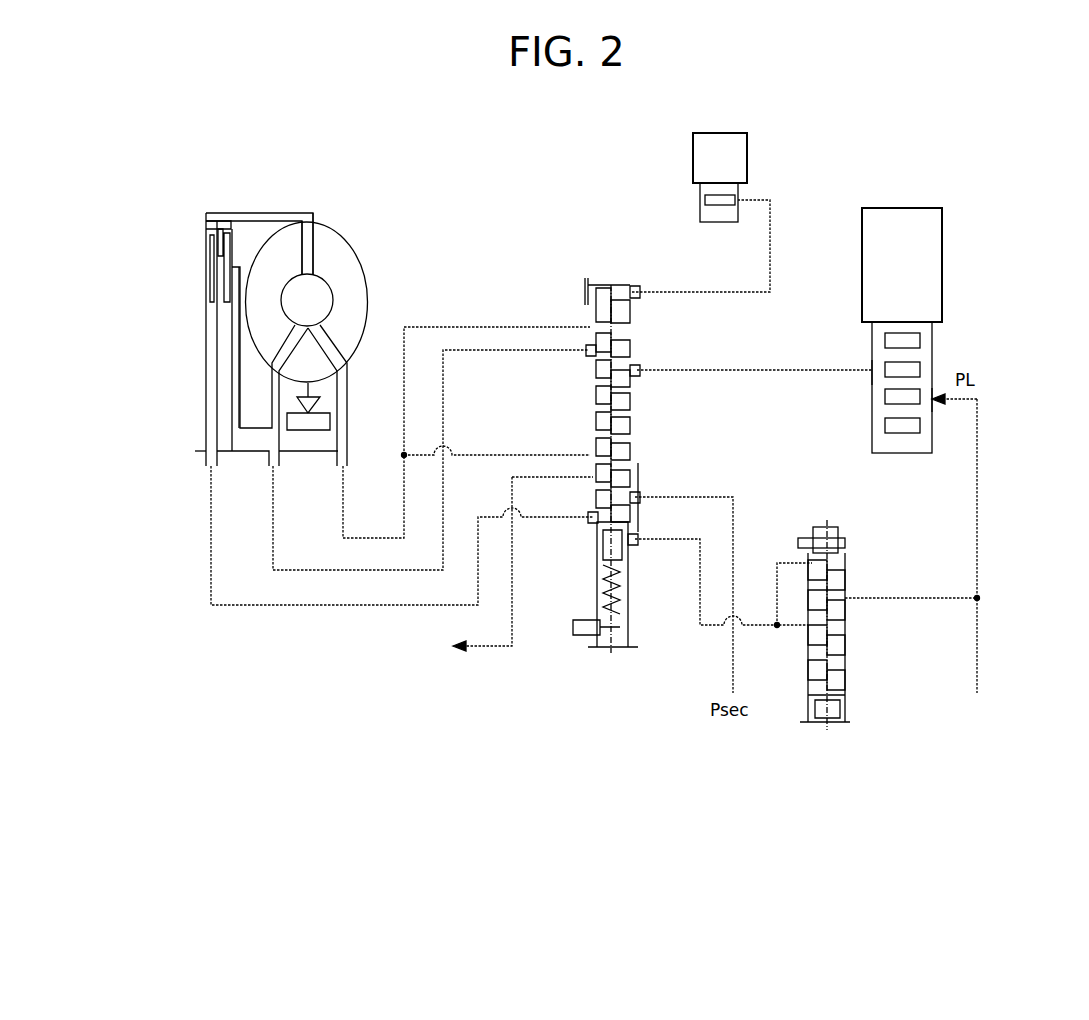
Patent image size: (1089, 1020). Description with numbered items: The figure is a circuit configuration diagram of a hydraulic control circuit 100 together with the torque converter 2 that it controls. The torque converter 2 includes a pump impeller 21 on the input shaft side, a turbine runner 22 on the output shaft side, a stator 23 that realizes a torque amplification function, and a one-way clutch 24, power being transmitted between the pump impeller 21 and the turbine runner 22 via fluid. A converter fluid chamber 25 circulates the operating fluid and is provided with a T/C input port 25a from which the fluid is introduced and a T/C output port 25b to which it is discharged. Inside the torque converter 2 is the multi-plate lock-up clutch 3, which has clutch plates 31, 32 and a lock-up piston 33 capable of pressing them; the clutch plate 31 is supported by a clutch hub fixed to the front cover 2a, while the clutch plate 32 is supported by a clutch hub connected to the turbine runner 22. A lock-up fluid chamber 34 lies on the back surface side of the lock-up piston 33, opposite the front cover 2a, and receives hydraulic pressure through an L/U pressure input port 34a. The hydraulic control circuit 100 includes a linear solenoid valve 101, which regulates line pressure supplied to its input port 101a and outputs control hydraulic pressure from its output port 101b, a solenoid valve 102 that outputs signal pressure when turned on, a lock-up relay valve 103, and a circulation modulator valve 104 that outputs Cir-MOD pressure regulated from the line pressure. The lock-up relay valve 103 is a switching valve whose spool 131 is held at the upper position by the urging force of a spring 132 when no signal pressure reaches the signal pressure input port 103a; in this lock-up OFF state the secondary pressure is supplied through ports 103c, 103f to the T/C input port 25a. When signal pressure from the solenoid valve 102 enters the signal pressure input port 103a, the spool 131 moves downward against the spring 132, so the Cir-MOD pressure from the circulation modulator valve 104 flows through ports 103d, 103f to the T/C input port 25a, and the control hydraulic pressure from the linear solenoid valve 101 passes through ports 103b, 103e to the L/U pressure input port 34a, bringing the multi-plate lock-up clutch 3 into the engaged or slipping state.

The torque converter 2 is at (348, 206).
The front cover 2a is at (205, 374).
The multi-plate lock-up clutch 3 is at (238, 230).
The pump impeller 21 is at (346, 244).
The turbine runner 22 is at (291, 230).
The stator 23 is at (312, 357).
The one-way clutch 24 is at (319, 403).
The converter fluid chamber 25 is at (258, 226).
The T/C input port 25a is at (207, 468).
The T/C output port 25b is at (350, 458).
The clutch plate 31 is at (206, 232).
The clutch plate 32 is at (226, 273).
The lock-up piston 33 is at (232, 340).
The lock-up fluid chamber 34 is at (248, 445).
The L/U pressure input port 34a is at (283, 465).
The hydraulic control circuit 100 is at (590, 241).
The linear solenoid valve (SLU) 101 is at (894, 206).
The input port 101a is at (933, 402).
The output port 101b is at (872, 375).
The solenoid valve (SL) 102 is at (749, 163).
The lock-up relay valve 103 is at (578, 290).
The signal pressure input port 103a is at (640, 290).
The port 103b is at (641, 371).
The port 103c is at (641, 497).
The port 103d is at (631, 546).
The port 103e is at (587, 355).
The port 103f is at (593, 530).
The circulation modulator valve 104 is at (846, 560).
The spool 131 is at (625, 597).
The spring 132 is at (580, 625).